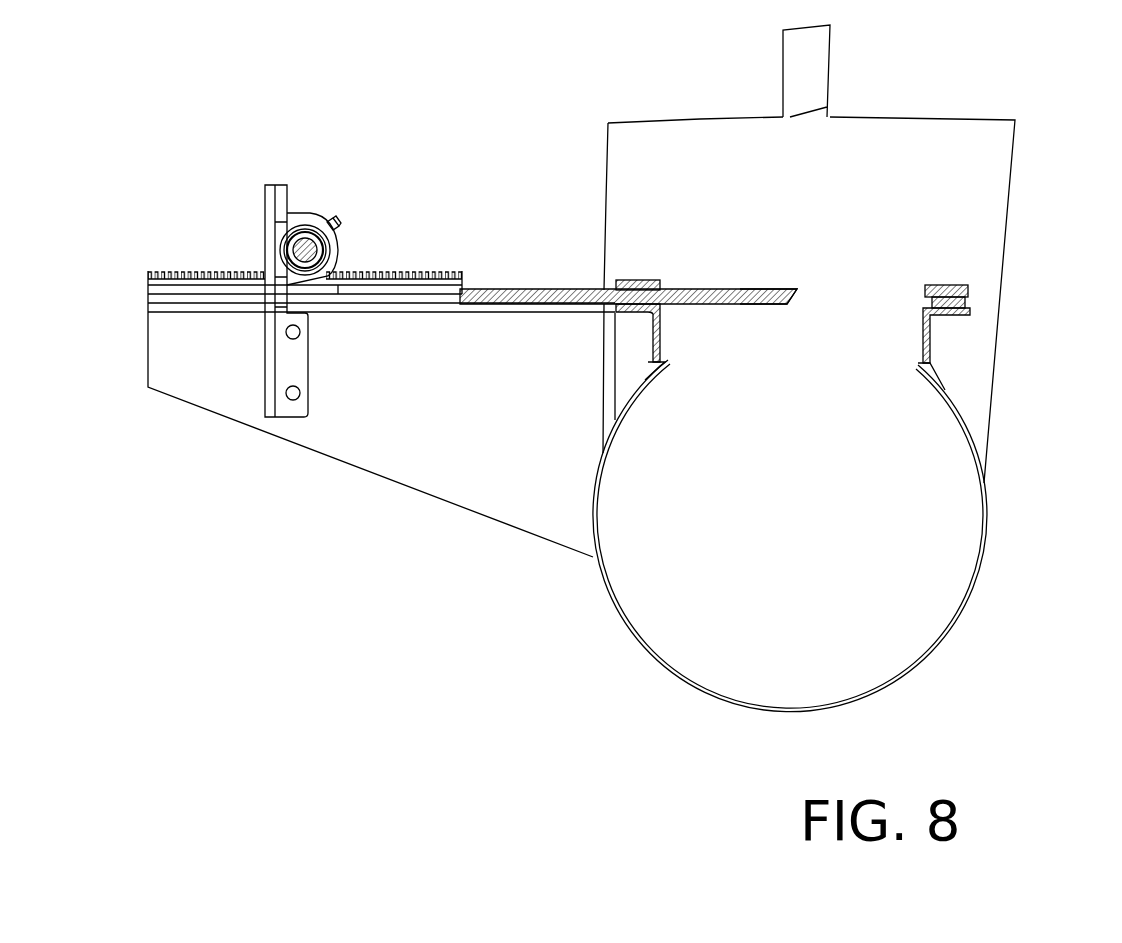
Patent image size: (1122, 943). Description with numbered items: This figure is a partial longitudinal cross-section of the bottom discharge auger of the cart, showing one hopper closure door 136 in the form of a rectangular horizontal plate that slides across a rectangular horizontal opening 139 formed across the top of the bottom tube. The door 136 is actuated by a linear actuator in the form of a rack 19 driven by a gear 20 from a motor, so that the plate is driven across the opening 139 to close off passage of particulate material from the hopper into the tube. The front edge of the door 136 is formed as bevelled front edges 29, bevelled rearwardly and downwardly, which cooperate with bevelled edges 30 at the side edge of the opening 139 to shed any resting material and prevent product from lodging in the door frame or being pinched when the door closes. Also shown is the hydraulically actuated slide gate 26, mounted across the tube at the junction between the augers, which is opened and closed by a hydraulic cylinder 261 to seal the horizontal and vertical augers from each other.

The rack 19 is at (423, 270).
The gear 20 is at (305, 232).
The slide gate 26 is at (988, 160).
The bevelled front edges 29 is at (790, 310).
The bevelled edges 30 is at (927, 293).
The closure door 136 is at (582, 290).
The opening 139 is at (672, 286).
The hydraulic cylinder 261 is at (810, 65).